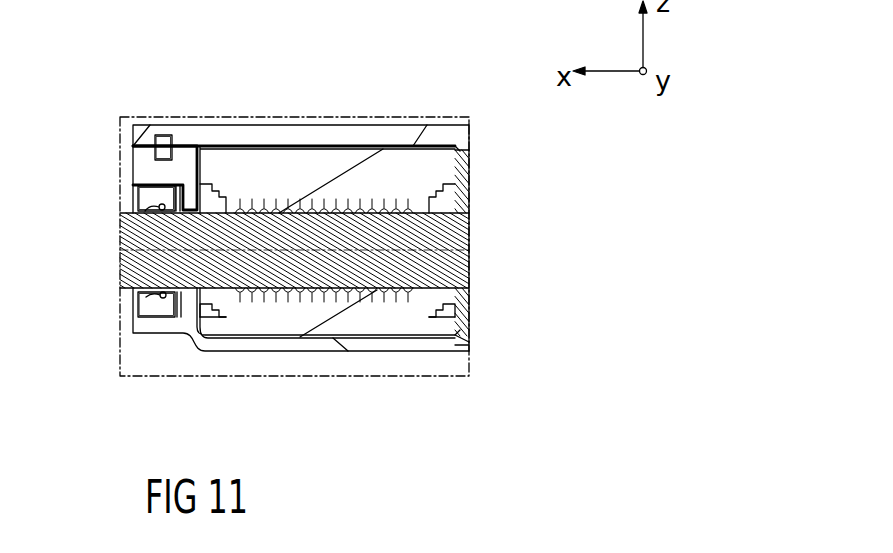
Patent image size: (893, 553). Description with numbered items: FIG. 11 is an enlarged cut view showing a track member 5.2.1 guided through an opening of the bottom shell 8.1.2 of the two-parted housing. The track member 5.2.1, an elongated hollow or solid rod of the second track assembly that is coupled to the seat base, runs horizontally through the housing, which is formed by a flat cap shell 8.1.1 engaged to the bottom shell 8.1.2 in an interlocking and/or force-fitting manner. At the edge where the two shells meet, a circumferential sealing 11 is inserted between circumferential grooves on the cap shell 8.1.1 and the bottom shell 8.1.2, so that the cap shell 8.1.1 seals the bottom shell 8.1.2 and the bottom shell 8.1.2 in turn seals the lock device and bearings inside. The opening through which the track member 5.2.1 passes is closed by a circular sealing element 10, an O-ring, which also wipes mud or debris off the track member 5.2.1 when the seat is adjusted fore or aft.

The cap shell 8.1.1 is at (450, 137).
The bottom shell 8.1.2 is at (233, 346).
The track member 5.2.1 is at (455, 265).
The sealing element 10 is at (160, 296).
The circumferential sealing 11 is at (158, 151).